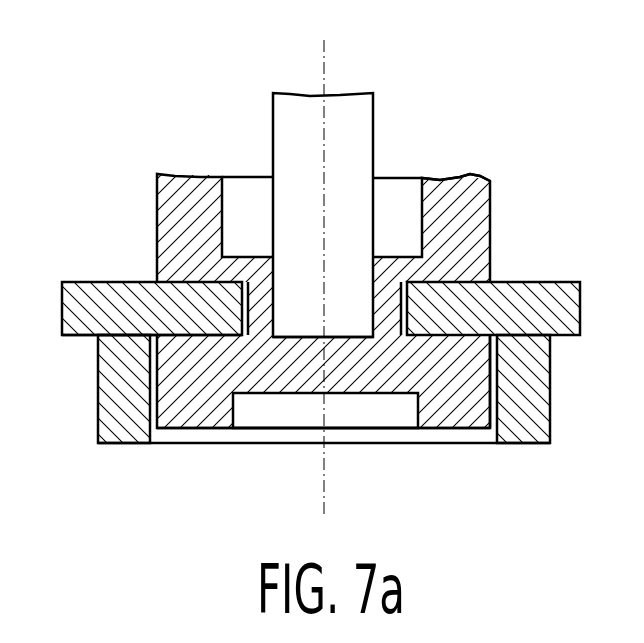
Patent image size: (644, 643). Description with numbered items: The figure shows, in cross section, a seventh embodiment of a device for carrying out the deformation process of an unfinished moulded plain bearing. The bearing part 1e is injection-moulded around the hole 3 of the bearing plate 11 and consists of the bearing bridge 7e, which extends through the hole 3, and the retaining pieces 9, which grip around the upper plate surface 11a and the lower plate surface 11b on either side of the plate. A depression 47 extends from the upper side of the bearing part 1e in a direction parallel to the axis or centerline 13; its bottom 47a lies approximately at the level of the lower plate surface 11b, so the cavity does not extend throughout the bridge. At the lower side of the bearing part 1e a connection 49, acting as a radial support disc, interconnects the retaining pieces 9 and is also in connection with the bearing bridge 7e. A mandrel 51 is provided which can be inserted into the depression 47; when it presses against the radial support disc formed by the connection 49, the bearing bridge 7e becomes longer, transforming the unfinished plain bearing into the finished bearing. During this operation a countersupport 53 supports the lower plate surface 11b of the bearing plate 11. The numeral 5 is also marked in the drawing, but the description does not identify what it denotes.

The bearing part 1e is at (497, 157).
The hole 3 is at (398, 337).
The base body 5 is at (393, 307).
The bearing bridge 7e is at (382, 265).
The retaining pieces 9 is at (177, 210).
The bearing plate 11 is at (557, 293).
The upper plate surface 11a is at (80, 280).
The lower plate surface 11b is at (75, 337).
The axis or centerline 13 is at (320, 137).
The depression 47 is at (285, 255).
The bottom of the depression 47a is at (293, 332).
The connection 49 is at (305, 400).
The mandrel 51 is at (360, 128).
The countersupport 53 is at (540, 420).